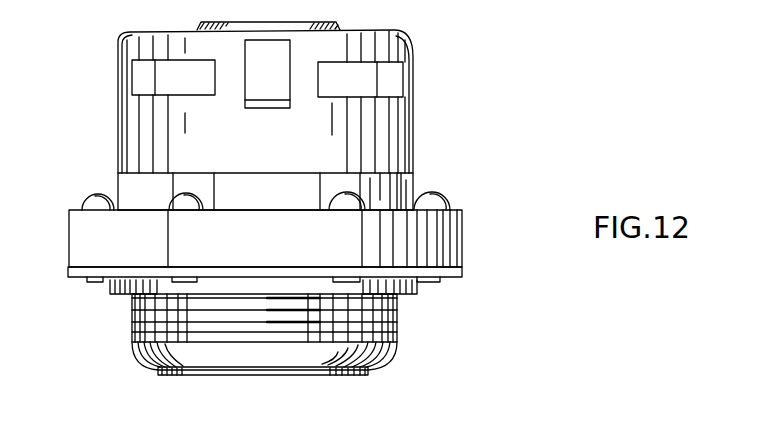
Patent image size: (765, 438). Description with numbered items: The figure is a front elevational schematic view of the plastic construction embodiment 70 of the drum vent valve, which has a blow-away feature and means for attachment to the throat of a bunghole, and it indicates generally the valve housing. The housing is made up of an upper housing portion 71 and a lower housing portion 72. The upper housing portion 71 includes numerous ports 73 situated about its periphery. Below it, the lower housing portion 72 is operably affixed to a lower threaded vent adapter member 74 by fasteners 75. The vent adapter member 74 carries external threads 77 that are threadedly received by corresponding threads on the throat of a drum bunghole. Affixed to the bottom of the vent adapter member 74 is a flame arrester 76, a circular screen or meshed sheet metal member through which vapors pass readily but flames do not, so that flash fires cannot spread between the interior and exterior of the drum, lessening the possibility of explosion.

The plastic construction embodiment 70 is at (418, 60).
The upper housing portion 71 is at (413, 120).
The lower housing portion 72 is at (413, 193).
The ports 73 is at (150, 58).
The lower threaded vent adapter member 74 is at (130, 328).
The fasteners 75 is at (95, 196).
The flame arrester 76 is at (287, 377).
The external threads 77 is at (398, 322).